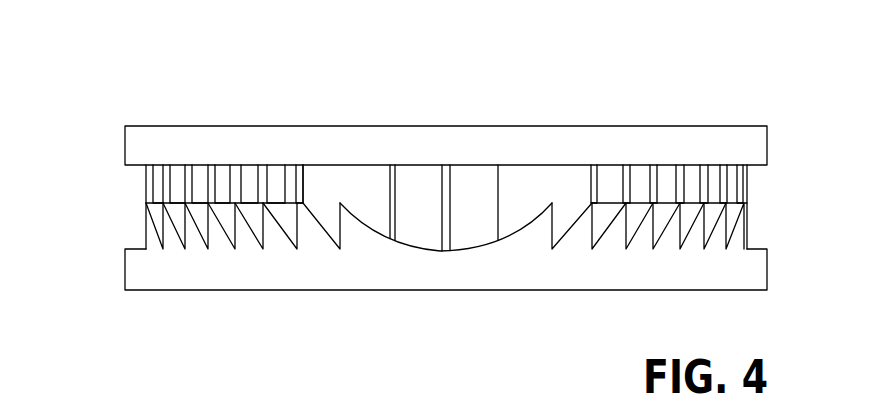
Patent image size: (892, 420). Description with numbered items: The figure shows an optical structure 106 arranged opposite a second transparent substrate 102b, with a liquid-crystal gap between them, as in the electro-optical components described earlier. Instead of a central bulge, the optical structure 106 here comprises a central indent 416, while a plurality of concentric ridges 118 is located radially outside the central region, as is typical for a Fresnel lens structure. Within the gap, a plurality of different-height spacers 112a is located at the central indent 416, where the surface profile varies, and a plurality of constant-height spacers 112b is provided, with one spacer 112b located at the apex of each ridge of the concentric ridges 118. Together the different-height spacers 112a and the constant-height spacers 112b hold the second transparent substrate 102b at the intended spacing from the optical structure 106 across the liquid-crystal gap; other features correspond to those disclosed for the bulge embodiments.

The second transparent substrate 102b is at (157, 110).
The optical structure 106 is at (102, 260).
The different-height spacers 112a is at (498, 179).
The constant-height spacers 112b is at (590, 182).
The central indent 416 is at (418, 249).
The concentric ridges 118 is at (603, 302).